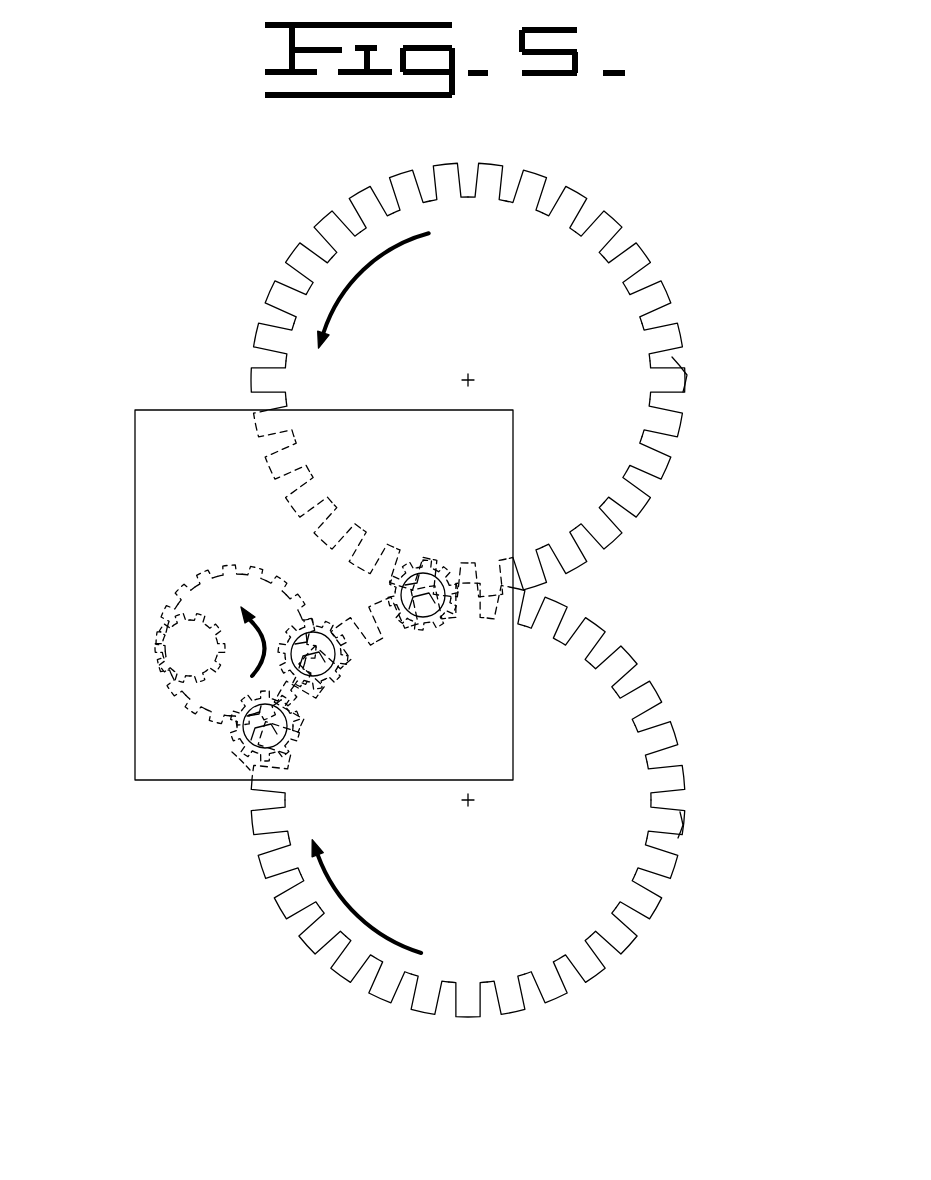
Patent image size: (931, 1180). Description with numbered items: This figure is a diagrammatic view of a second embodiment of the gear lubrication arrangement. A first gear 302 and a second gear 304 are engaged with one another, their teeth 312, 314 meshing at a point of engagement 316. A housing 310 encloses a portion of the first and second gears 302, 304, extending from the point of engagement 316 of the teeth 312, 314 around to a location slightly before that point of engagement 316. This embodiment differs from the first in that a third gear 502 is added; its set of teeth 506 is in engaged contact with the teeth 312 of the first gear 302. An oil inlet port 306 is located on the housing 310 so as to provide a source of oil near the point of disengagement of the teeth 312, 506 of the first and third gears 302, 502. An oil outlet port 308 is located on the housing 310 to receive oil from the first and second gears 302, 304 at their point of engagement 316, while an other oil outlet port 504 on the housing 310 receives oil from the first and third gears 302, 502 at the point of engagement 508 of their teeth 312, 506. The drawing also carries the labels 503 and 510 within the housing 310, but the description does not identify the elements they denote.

The first gear 302 is at (628, 835).
The second gear 304 is at (602, 282).
The oil inlet port 306 is at (335, 657).
The oil outlet port 308 is at (433, 572).
The housing 310 is at (205, 410).
The teeth of the first gear 312 is at (683, 825).
The teeth of the second gear 314 is at (687, 375).
The point of engagement 316 is at (372, 589).
The third gear 502 is at (198, 625).
The gear 503 is at (183, 705).
The other oil outlet port 504 is at (287, 735).
The teeth of the third gear 506 is at (160, 588).
The point of engagement of the first and third gears 508 is at (238, 760).
The gear 510 is at (362, 646).